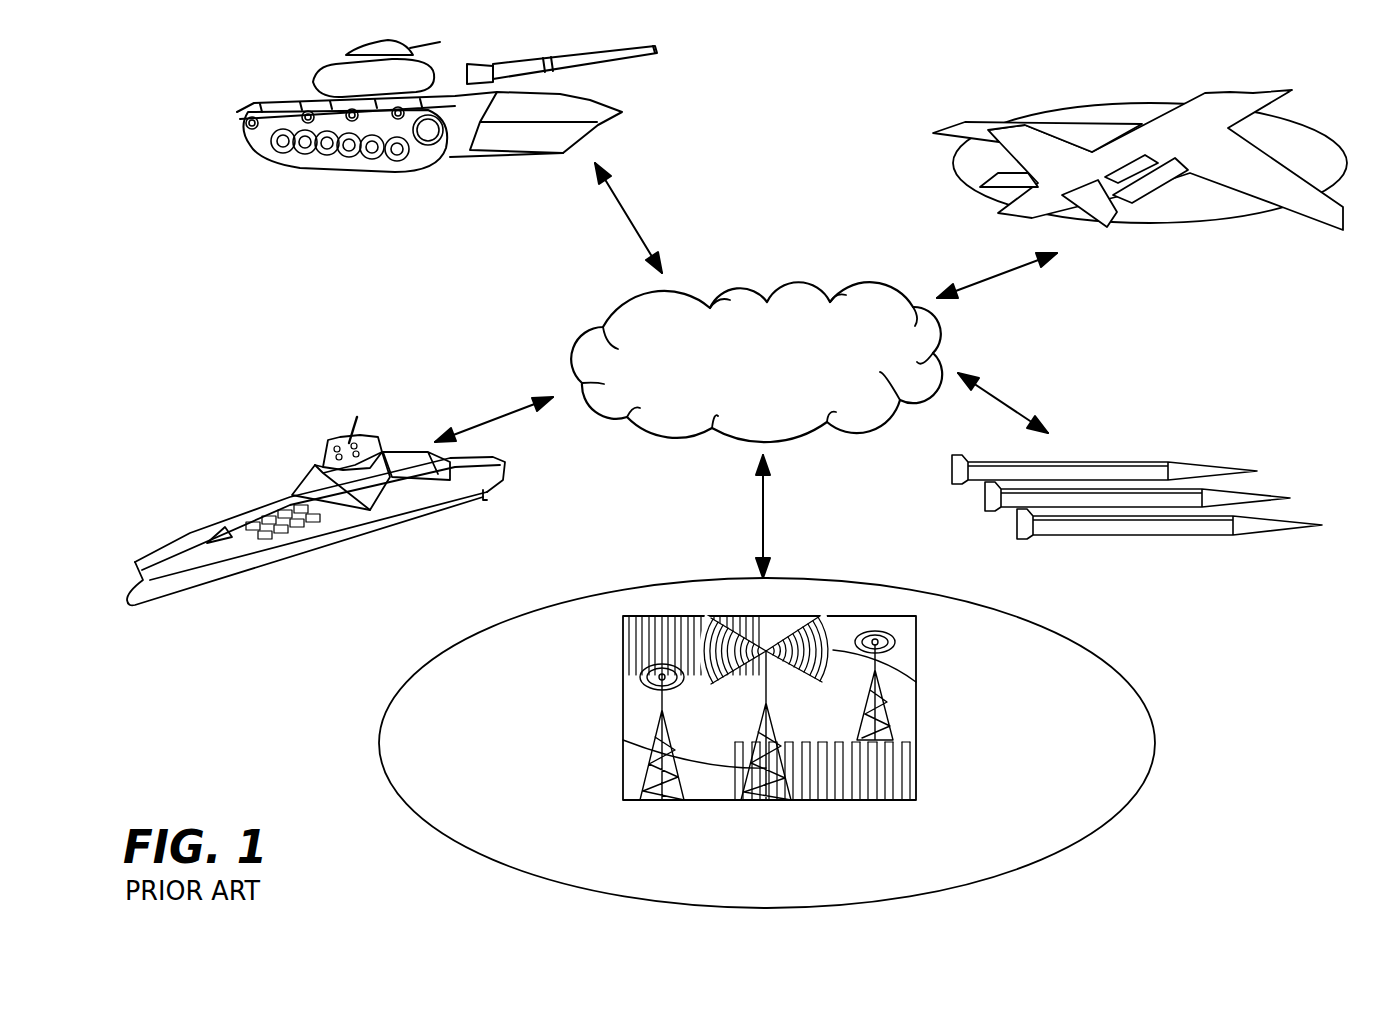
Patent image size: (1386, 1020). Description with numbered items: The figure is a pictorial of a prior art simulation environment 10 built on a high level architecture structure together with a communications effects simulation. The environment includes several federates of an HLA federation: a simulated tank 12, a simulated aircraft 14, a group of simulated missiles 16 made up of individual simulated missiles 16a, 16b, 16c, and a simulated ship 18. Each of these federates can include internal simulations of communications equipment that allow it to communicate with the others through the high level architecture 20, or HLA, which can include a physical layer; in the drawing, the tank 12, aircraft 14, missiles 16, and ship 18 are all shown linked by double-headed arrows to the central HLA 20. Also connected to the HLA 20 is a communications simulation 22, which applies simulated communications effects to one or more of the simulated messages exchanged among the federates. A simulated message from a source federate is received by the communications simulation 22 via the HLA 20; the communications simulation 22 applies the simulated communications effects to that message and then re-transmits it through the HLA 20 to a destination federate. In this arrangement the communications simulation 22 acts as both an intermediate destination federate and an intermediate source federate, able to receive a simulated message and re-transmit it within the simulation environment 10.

The simulation environment 10 is at (280, 290).
The simulated tank 12 is at (328, 80).
The simulated aircraft 14 is at (1210, 92).
The simulated missiles 16 is at (933, 463).
The simulated missile 16a is at (1232, 463).
The simulated missile 16b is at (1267, 490).
The simulated missile 16c is at (1298, 518).
The simulated ship 18 is at (223, 517).
The high level architecture 20 is at (790, 282).
The communications simulation 22 is at (917, 700).